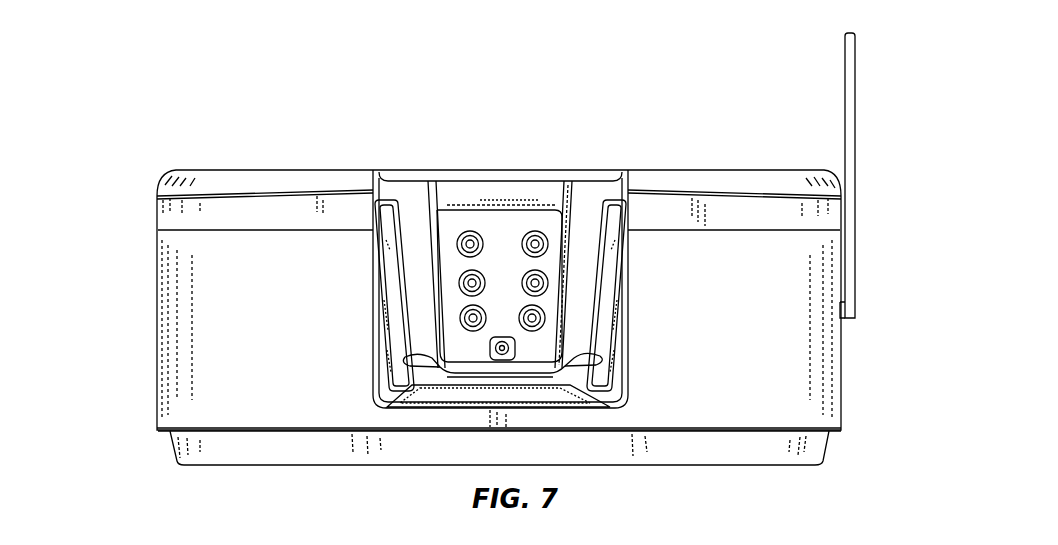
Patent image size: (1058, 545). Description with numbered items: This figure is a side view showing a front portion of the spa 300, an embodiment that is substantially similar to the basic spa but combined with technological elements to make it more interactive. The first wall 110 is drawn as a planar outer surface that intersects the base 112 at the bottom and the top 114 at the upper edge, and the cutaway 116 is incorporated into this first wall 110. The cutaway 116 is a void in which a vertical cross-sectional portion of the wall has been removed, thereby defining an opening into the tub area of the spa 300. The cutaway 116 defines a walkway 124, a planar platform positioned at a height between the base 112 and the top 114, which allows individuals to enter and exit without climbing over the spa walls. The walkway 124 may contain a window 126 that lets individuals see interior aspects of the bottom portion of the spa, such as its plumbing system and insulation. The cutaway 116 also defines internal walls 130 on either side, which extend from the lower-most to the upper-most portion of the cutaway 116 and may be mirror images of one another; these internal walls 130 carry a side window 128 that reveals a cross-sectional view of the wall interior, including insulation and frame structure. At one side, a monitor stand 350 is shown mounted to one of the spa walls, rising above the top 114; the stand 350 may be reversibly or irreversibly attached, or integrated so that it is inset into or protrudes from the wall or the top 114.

The spa 300 is at (173, 103).
The monitor stand 350 is at (848, 65).
The first wall 110 is at (227, 313).
The base 112 is at (139, 433).
The top 114 is at (143, 170).
The cutaway 116 is at (492, 378).
The walkway 124 is at (410, 400).
The window 126 is at (533, 398).
The side window 128 is at (607, 372).
The internal walls 130 is at (622, 390).